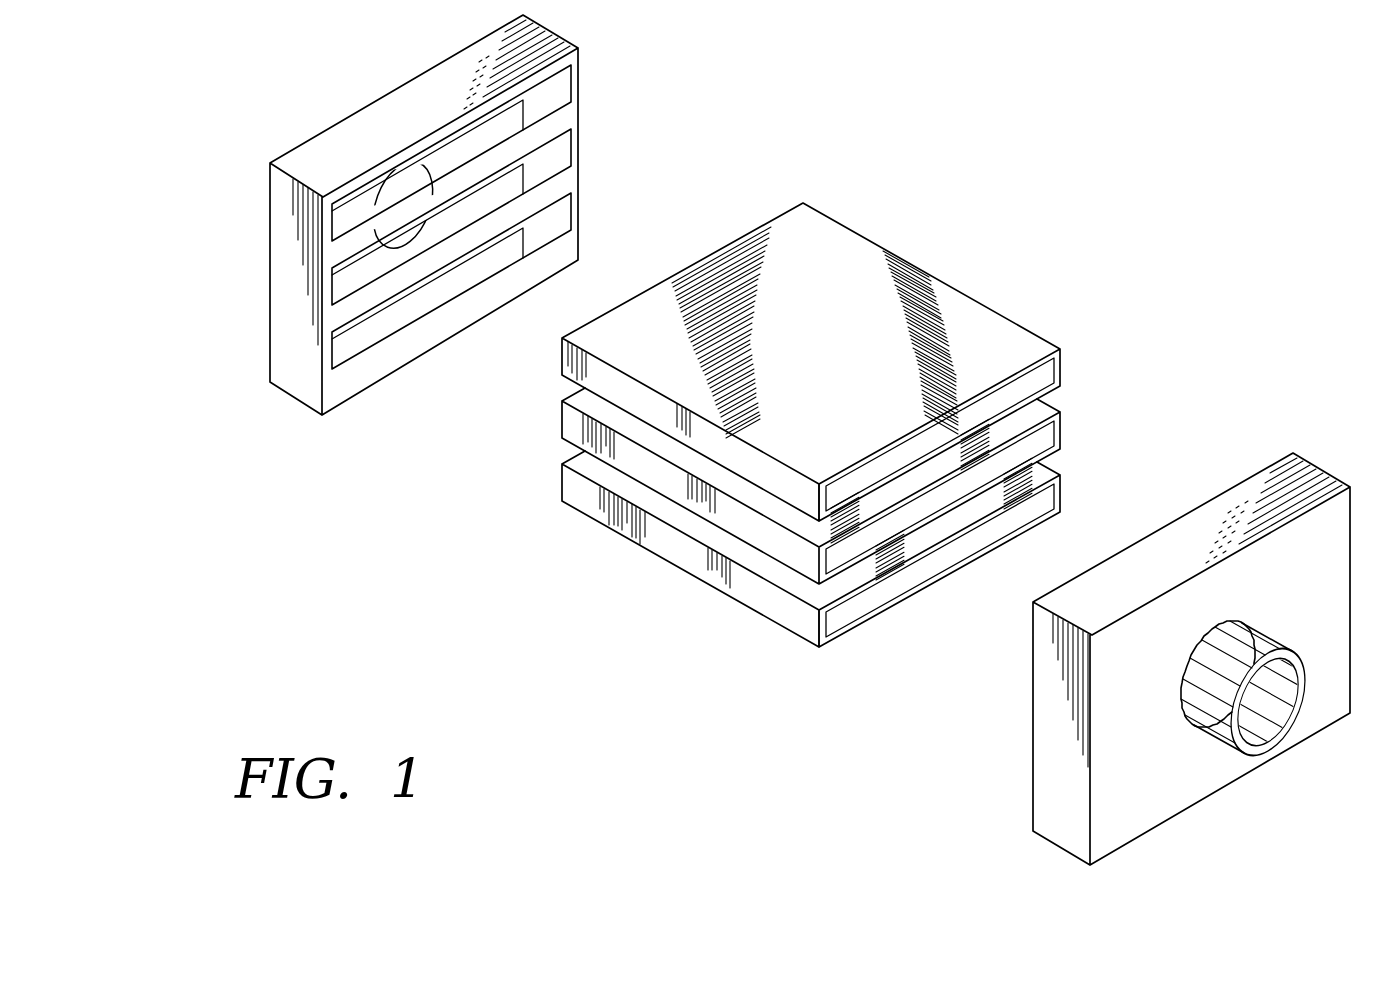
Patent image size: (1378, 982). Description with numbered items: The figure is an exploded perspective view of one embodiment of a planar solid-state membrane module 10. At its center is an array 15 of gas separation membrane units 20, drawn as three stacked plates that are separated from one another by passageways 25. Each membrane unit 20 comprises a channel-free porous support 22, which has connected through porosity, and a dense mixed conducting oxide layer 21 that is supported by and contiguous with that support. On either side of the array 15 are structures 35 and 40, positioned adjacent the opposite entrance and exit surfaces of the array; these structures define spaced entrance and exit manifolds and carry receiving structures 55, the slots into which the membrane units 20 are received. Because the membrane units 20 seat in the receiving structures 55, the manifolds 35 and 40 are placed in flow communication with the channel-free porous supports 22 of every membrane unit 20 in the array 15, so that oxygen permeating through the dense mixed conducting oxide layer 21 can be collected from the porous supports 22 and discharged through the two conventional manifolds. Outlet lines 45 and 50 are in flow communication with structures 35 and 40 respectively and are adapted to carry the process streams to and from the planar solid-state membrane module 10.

The planar solid-state membrane module 10 is at (812, 420).
The array of gas separation membrane units 15 is at (838, 222).
The membrane unit 20 is at (562, 483).
The dense mixed conducting oxide layer 21 is at (818, 519).
The channel-free porous support 22 is at (970, 435).
The passageways 25 is at (1053, 527).
The manifold structure 35 is at (1194, 674).
The manifold structure 40 is at (482, 215).
The outlet line 45 is at (1280, 742).
The outlet line 50 is at (433, 163).
The receiving structures 55 is at (580, 235).